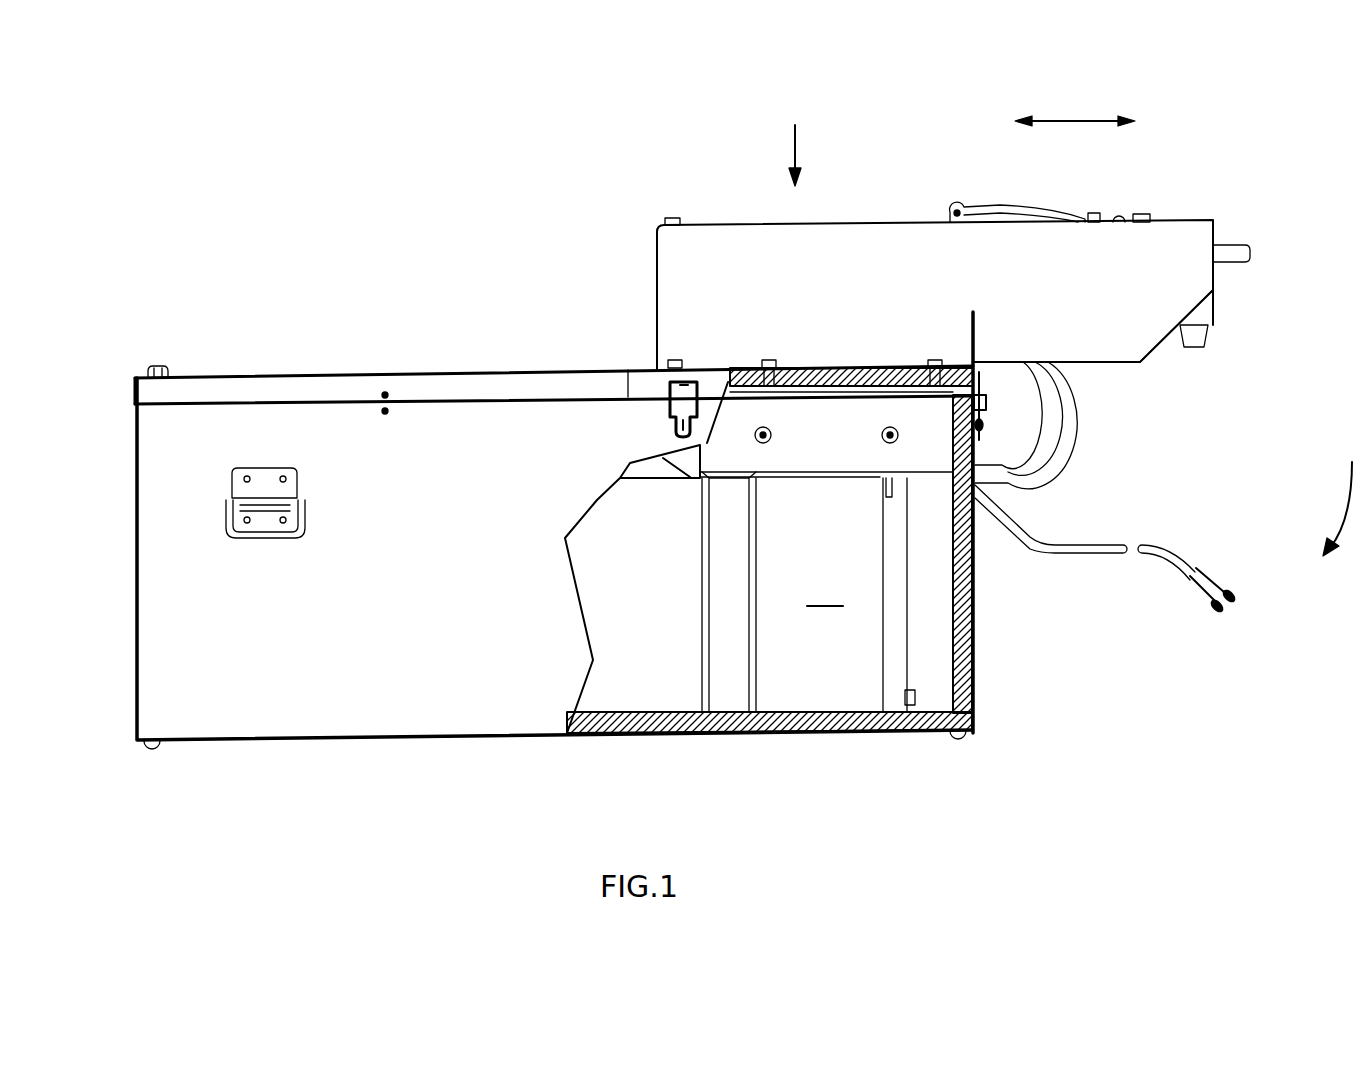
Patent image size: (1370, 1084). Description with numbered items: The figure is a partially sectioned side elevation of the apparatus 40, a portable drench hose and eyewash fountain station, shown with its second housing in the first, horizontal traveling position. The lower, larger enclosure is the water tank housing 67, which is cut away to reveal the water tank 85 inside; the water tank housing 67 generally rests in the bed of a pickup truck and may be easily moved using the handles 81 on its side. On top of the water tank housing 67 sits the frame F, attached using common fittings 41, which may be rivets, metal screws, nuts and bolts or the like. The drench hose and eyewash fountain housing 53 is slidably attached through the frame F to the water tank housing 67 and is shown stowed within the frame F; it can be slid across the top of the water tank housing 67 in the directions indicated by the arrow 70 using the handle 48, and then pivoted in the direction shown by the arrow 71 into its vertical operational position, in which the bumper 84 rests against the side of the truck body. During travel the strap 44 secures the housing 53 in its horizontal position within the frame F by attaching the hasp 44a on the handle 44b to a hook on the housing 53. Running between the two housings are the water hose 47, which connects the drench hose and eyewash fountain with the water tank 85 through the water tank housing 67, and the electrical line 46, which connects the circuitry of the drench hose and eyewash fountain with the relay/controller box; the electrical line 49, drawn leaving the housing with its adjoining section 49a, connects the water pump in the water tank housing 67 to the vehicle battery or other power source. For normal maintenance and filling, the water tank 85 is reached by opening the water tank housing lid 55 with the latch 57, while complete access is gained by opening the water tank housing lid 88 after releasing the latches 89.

The apparatus 40 is at (801, 139).
The arrow 70 is at (1070, 120).
The arrow 71 is at (1342, 513).
The frame F is at (672, 250).
The strap 44 is at (990, 207).
The hasp 44a is at (1122, 213).
The handle 44b is at (1095, 211).
The handle 48 is at (1232, 245).
The second housing 53 is at (1203, 308).
The bumper 84 is at (1200, 340).
The common fittings 41 is at (678, 360).
The electrical line 46 is at (1047, 402).
The water hose 47 is at (1073, 424).
The latches 89 is at (662, 378).
The electrical line 49 is at (1107, 550).
The hose section 49a is at (977, 487).
The latch 57 is at (165, 370).
The water tank housing lid 55 is at (262, 385).
The water tank housing 67 is at (450, 428).
The handles 81 is at (300, 490).
The water tank housing lid 88 is at (647, 383).
The water tank 85 is at (826, 591).